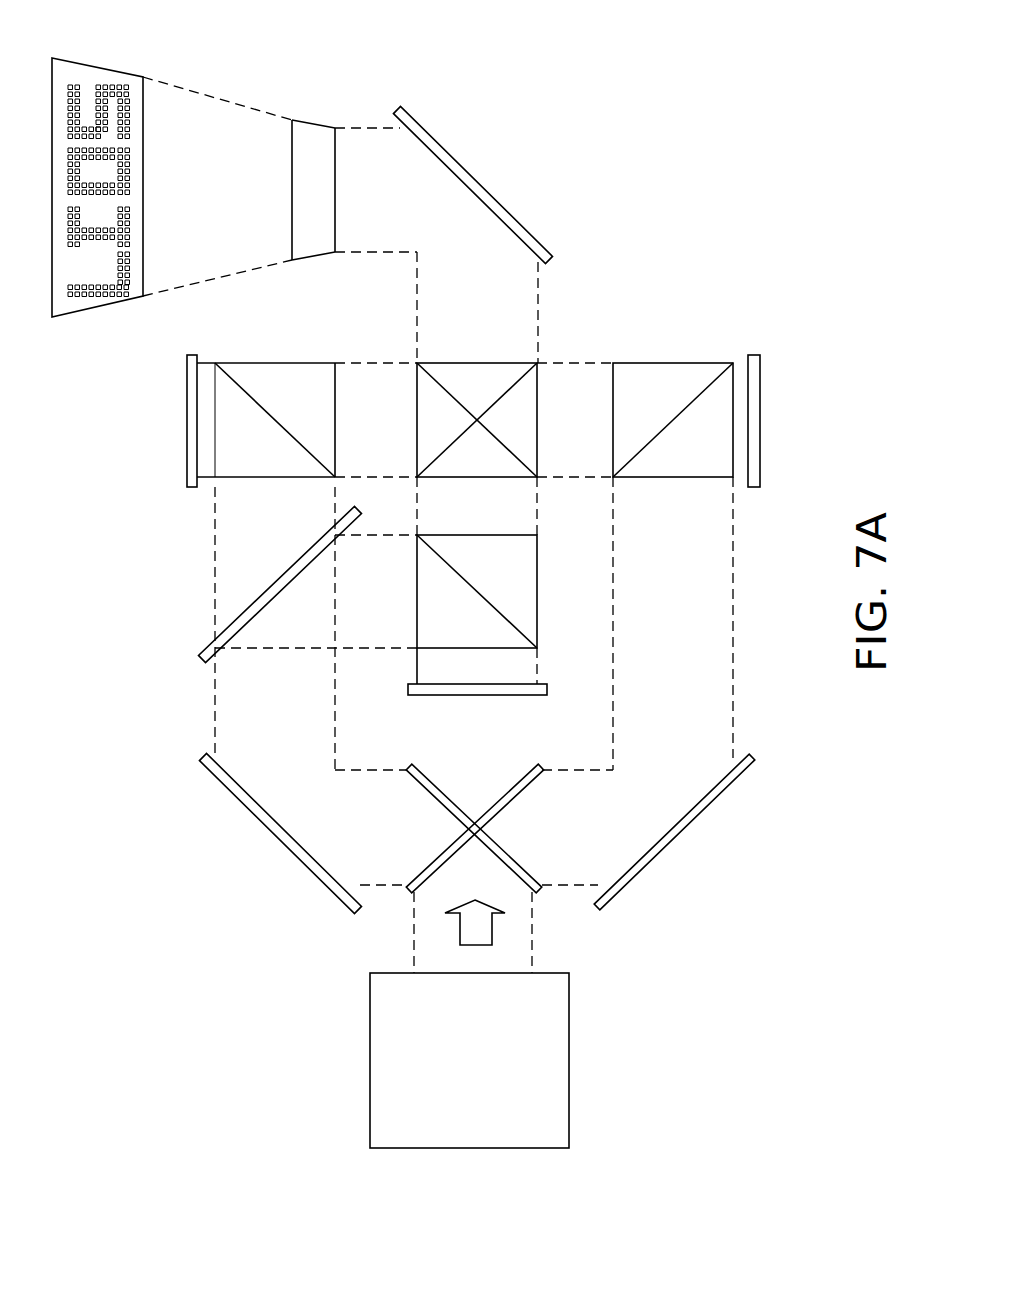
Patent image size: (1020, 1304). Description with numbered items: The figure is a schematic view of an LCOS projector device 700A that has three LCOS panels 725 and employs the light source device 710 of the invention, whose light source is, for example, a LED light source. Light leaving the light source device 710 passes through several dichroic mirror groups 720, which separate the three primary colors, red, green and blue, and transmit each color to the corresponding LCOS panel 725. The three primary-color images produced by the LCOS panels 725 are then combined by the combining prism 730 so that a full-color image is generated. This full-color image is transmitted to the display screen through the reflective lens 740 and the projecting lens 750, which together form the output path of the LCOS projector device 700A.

The LCOS projector device 700A is at (127, 1060).
The light source device 710 is at (370, 1062).
The dichroic mirror groups 720 is at (189, 729).
The LCOS panel 725 is at (187, 422).
The combining prism 730 is at (475, 363).
The reflective lens 740 is at (438, 143).
The projecting lens 750 is at (313, 120).